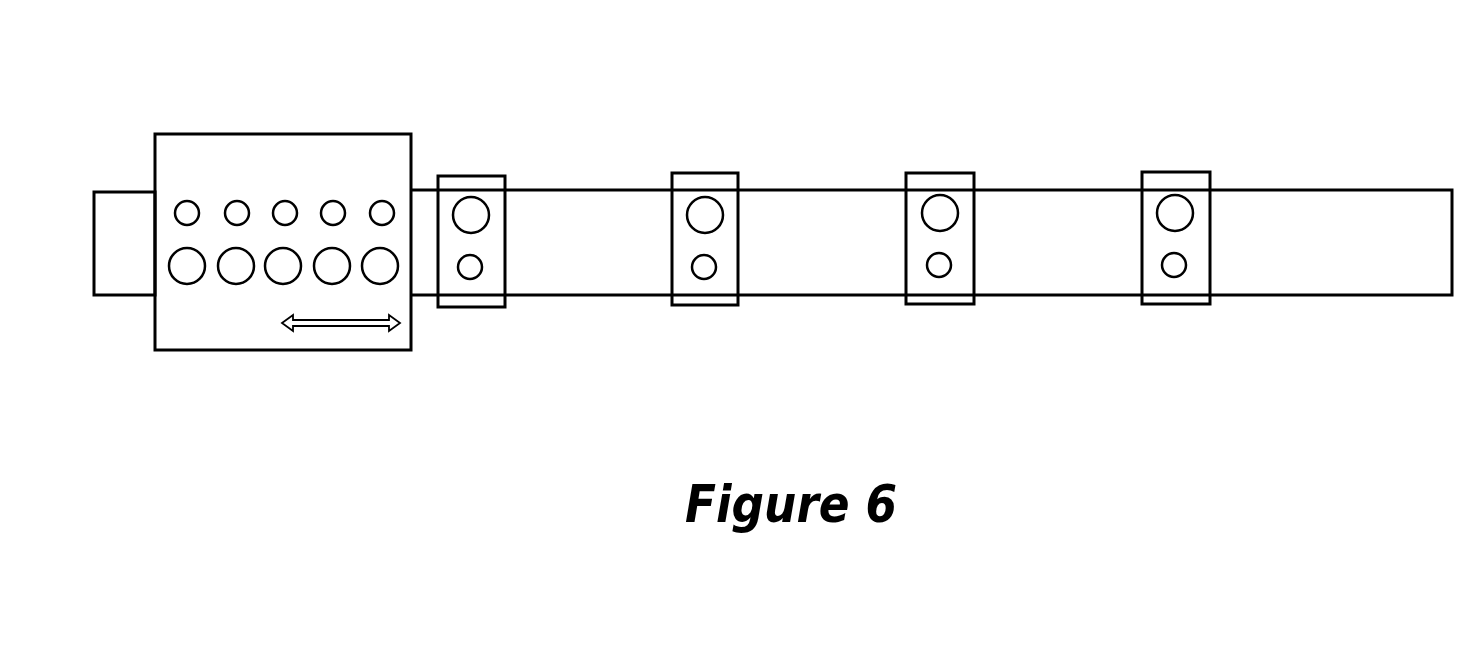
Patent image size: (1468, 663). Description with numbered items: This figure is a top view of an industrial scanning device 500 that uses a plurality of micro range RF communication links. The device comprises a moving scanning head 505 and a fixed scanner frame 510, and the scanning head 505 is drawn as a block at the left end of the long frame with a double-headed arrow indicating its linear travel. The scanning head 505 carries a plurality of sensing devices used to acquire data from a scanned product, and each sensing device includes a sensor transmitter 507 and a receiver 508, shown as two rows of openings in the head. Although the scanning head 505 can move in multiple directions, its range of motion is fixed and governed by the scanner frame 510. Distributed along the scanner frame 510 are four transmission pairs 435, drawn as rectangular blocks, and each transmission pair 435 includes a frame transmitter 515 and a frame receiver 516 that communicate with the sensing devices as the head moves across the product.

The scanning device 500 is at (210, 90).
The scanning head 505 is at (232, 352).
The sensor transmitter 507 is at (190, 210).
The receiver 508 is at (183, 276).
The scanner frame 510 is at (1362, 295).
The transmission pairs 435 is at (478, 308).
The frame transmitter 515 is at (472, 268).
The frame receiver 516 is at (480, 217).